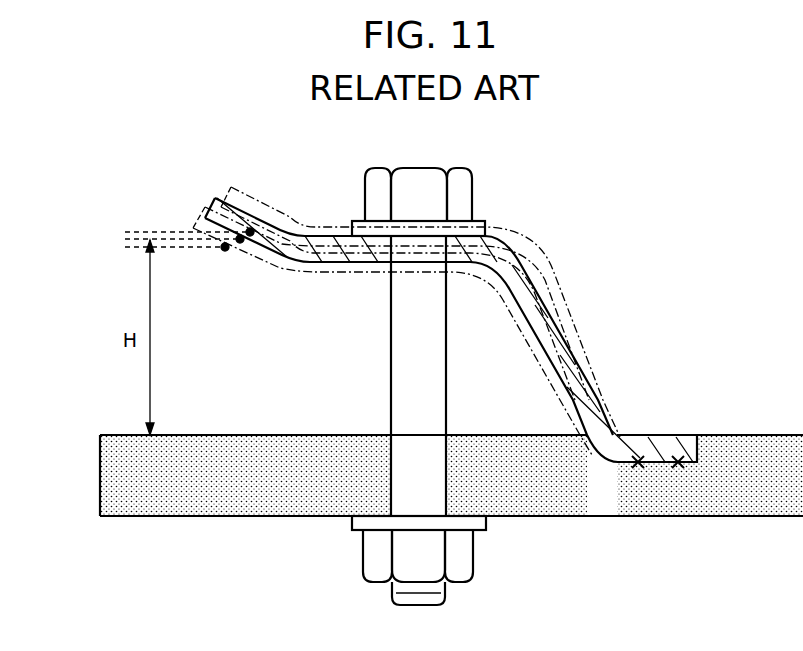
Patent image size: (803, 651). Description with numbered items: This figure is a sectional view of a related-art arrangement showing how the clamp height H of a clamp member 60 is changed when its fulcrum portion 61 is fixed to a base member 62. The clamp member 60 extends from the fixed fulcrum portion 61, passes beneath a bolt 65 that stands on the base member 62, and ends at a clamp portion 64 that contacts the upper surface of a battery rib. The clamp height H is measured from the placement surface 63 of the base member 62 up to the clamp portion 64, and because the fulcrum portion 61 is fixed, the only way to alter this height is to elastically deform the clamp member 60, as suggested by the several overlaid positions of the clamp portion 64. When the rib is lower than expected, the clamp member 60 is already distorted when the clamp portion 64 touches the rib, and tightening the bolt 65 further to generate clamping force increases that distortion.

The clamp member 60 is at (566, 333).
The fulcrum portion 61 is at (660, 435).
The base member 62 is at (274, 498).
The placement surface 63 is at (268, 435).
The clamp portion 64 is at (250, 229).
The bolt 65 is at (410, 361).